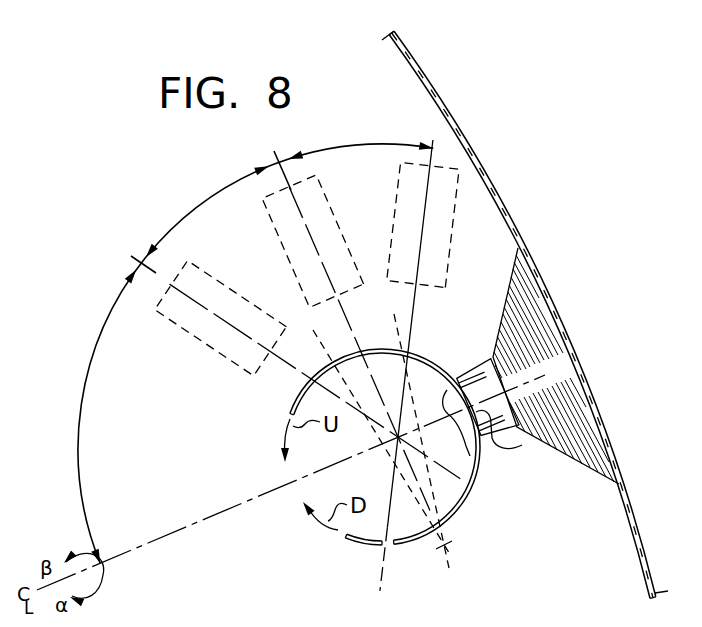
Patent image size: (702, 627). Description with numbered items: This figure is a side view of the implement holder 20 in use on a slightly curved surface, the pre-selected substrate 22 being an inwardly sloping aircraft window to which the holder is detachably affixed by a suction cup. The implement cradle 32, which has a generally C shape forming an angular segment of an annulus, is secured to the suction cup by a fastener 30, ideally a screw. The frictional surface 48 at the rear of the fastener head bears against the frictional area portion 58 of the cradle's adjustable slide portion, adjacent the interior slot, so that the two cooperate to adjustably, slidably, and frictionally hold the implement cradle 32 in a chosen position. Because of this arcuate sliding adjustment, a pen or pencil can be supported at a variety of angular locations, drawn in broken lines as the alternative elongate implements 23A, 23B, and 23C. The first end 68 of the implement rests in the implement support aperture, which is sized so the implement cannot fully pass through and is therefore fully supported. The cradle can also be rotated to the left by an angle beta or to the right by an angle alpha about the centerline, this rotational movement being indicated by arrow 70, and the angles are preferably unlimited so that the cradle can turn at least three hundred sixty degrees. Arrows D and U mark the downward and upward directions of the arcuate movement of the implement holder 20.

The implement holder 20 is at (540, 490).
The pre-selected substrate 22 is at (640, 546).
The elongate implement in first alternative location 23A is at (290, 262).
The elongate implement in second alternative location 23B is at (199, 340).
The elongate implement in third alternative location 23C is at (398, 208).
The fastener 30 is at (470, 465).
The implement cradle 32 is at (458, 510).
The frictional surface 48 is at (497, 432).
The frictional area portion 58 is at (448, 390).
The first end of the elongate implement 68 is at (443, 547).
The rotational movement arrow 70 is at (102, 576).